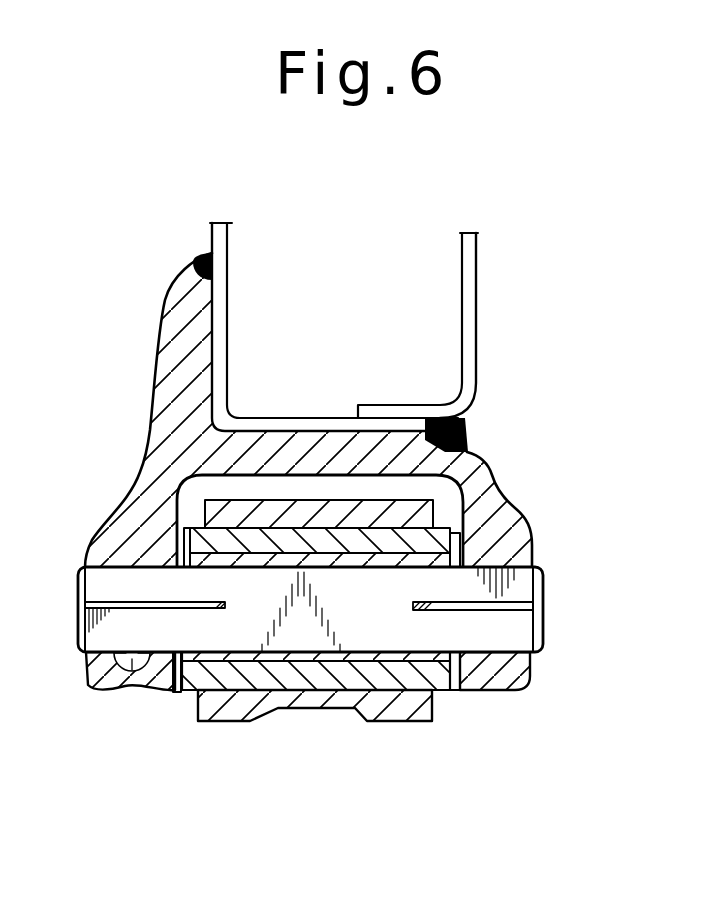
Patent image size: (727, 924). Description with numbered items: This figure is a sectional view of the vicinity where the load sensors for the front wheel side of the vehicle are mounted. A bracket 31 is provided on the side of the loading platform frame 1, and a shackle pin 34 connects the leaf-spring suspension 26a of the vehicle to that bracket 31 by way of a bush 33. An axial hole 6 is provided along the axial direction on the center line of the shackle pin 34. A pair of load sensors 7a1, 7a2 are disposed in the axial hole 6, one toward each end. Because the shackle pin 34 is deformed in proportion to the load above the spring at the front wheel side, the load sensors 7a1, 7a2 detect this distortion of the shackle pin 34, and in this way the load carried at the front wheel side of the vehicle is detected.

The loading platform frame 1 is at (230, 296).
The bracket 31 is at (180, 410).
The axial hole 6 is at (122, 597).
The shackle pin 34 is at (513, 630).
The load sensor 7a1 is at (218, 608).
The load sensor 7a2 is at (423, 612).
The bush 33 is at (325, 672).
The suspension (leaf spring) 26a is at (408, 707).